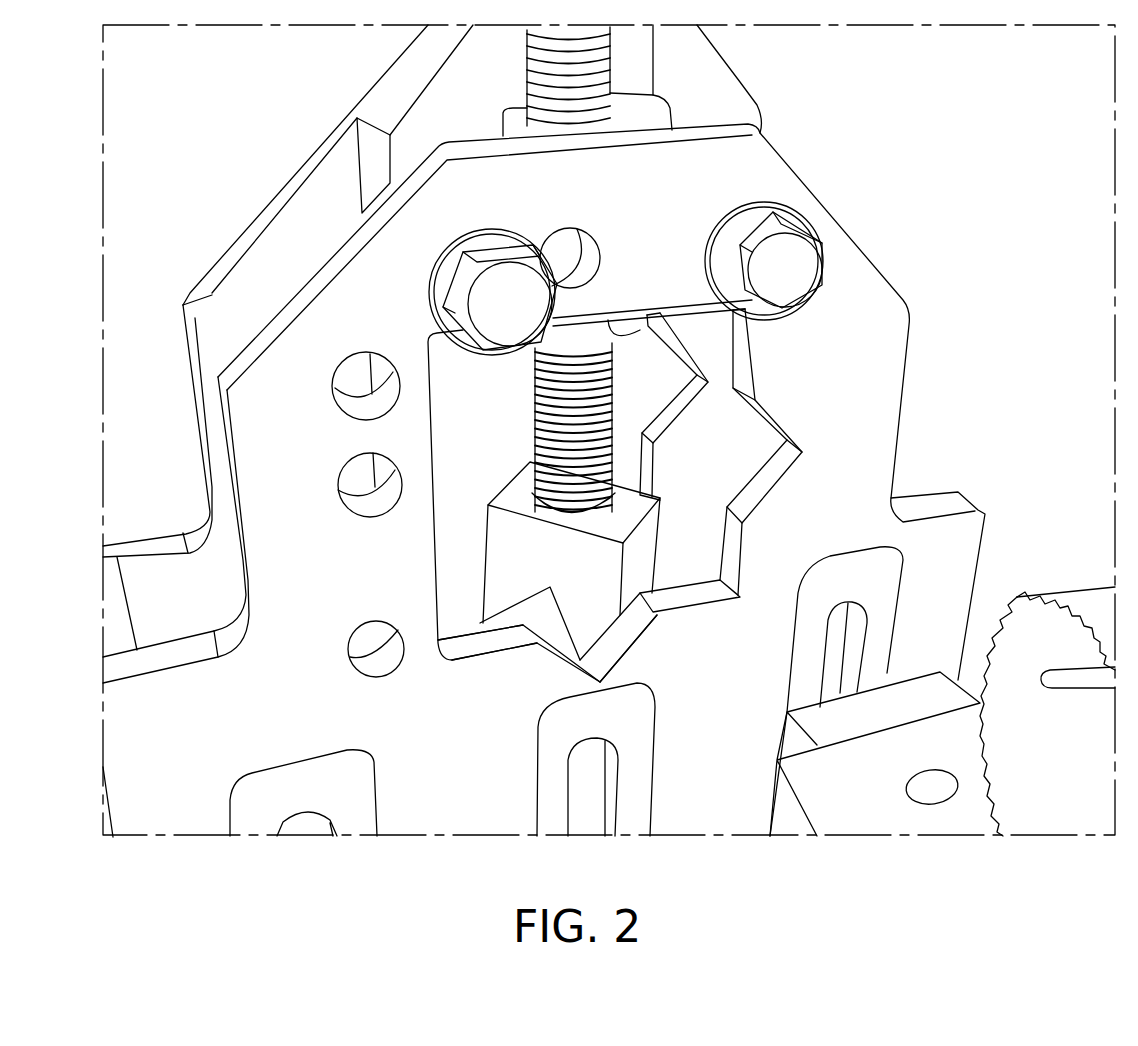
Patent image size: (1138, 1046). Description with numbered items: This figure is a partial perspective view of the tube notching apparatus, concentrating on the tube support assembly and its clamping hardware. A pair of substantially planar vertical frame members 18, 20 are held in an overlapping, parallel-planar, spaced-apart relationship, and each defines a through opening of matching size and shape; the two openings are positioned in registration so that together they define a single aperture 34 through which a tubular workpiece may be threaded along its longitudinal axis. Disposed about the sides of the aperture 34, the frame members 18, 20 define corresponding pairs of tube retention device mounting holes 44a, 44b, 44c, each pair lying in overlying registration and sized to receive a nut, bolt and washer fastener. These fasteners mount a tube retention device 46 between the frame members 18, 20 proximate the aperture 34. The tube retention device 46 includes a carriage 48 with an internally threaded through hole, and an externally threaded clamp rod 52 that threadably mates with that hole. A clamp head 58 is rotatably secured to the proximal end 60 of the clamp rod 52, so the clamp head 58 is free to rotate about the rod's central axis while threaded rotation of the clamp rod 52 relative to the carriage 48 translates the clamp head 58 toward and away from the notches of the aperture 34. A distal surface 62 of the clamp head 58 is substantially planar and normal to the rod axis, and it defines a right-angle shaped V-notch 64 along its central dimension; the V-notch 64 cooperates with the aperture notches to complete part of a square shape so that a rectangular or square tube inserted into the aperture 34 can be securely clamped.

The vertical frame member 18 is at (255, 347).
The vertical frame member 20 is at (243, 233).
The aperture 34 is at (493, 451).
The tube retention device mounting hole 44a is at (337, 413).
The tube retention device mounting hole 44b is at (337, 507).
The tube retention device mounting hole 44c is at (487, 231).
The tube retention device 46 is at (400, 55).
The carriage 48 is at (372, 113).
The clamp rod 52 is at (613, 68).
The clamp head 58 is at (493, 590).
The proximal end 60 is at (628, 492).
The distal surface 62 is at (510, 611).
The V-notch 64 is at (577, 620).